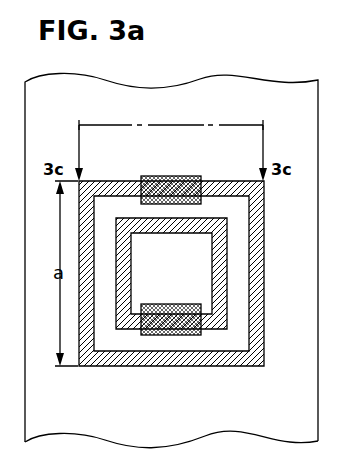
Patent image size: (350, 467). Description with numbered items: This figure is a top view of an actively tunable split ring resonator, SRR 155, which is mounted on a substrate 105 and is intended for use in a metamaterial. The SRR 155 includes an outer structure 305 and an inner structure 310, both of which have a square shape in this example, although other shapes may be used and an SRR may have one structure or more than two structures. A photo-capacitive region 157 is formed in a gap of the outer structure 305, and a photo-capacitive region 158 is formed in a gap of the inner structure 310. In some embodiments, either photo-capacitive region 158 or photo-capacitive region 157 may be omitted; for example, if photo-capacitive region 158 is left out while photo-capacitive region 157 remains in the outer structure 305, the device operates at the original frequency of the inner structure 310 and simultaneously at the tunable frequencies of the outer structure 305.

The substrate 105 is at (210, 87).
The actively tunable split ring resonator 155 is at (88, 180).
The photo-capacitive region 157 is at (185, 192).
The photo-capacitive region 158 is at (192, 328).
The outer structure 305 is at (262, 233).
The inner structure 310 is at (222, 303).